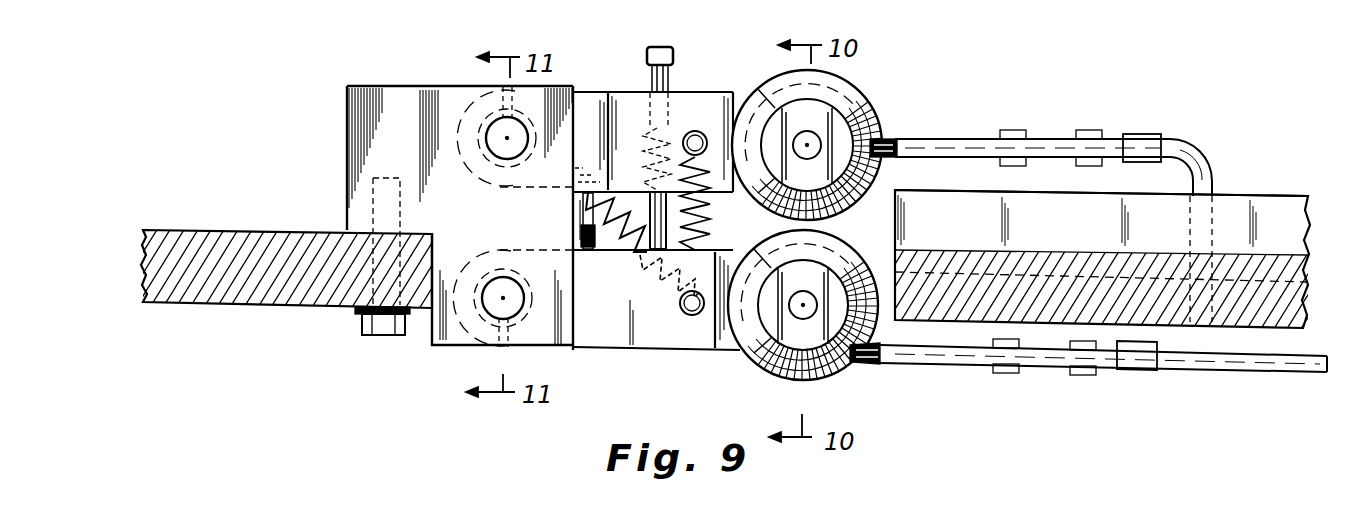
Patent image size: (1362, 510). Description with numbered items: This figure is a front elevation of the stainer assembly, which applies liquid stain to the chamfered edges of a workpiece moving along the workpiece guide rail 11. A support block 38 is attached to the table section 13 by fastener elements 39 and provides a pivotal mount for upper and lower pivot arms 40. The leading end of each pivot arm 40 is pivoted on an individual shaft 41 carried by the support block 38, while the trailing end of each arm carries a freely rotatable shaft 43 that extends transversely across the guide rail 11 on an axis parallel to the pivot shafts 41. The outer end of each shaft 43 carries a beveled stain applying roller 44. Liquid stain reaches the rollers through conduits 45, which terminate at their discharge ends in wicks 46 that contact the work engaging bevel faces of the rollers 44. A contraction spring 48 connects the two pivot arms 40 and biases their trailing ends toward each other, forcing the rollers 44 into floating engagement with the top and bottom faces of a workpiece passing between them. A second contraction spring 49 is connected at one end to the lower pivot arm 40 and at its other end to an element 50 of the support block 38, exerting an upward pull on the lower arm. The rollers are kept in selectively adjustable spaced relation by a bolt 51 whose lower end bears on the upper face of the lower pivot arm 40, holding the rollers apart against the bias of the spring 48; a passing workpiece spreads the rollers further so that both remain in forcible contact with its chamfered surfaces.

The workpiece guide rail 11 is at (1270, 202).
The table section 13 is at (268, 232).
The support block 38 is at (398, 90).
The fastener elements 39 is at (384, 330).
The pivot arms 40 is at (622, 96).
The pivot shaft 41 is at (497, 285).
The roller shaft 43 is at (808, 296).
The stain applying roller 44 is at (852, 103).
The conduits 45 is at (1188, 150).
The wicks 46 is at (897, 138).
The contraction spring 48 is at (710, 205).
The second contraction spring 49 is at (610, 252).
The element of the support block 50 is at (580, 205).
The bolt 51 is at (660, 47).